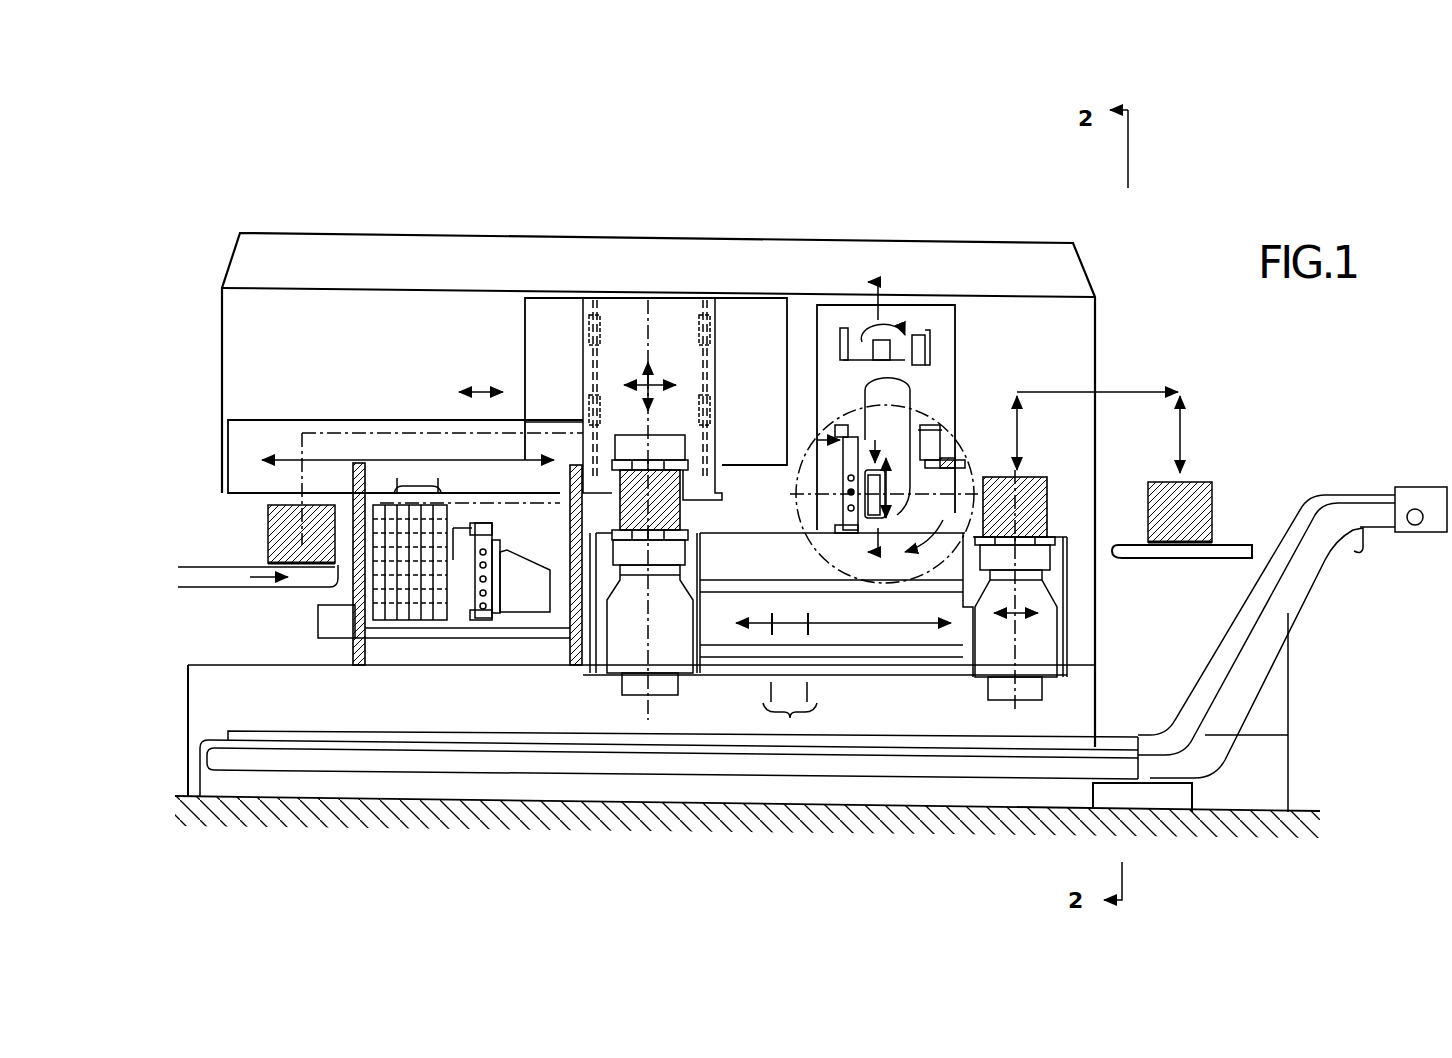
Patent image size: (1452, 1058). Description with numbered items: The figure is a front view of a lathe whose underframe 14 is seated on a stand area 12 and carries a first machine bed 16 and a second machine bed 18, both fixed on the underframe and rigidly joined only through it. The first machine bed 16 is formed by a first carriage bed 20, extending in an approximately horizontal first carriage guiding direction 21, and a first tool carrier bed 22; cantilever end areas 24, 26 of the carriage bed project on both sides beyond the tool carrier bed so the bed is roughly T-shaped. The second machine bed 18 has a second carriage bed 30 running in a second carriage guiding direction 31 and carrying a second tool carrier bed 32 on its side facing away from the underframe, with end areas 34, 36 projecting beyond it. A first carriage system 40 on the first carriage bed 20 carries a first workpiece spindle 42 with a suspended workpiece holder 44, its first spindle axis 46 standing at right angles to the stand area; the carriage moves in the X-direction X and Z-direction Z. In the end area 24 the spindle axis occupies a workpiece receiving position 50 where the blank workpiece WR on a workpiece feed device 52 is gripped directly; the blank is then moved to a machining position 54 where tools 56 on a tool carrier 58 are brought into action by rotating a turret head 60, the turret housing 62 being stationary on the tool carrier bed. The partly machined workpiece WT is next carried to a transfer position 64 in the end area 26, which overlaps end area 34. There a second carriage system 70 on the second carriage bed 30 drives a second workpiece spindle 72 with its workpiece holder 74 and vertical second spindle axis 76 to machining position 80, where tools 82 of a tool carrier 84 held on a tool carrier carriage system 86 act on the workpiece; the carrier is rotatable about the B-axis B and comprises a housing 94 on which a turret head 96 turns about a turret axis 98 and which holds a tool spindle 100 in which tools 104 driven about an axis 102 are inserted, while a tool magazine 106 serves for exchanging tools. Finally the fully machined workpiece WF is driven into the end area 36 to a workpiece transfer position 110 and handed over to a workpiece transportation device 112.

The stand area 12 is at (292, 792).
The underframe 14 is at (334, 712).
The first machine bed 16 is at (364, 405).
The second machine bed 18 is at (905, 468).
The first carriage bed 20 is at (262, 432).
The first carriage guiding direction 21 is at (287, 457).
The first tool carrier bed 22 is at (398, 632).
The cantilever end area 24 is at (237, 436).
The cantilever end area 26 is at (745, 500).
The second carriage bed 30 is at (860, 548).
The second carriage guiding direction 31 is at (832, 626).
The second tool carrier bed 32 is at (952, 340).
The end area 34 is at (740, 540).
The end area 36 is at (1150, 482).
The first carriage system 40 is at (581, 412).
The first workpiece spindle 42 is at (705, 428).
The workpiece holder 44 is at (722, 468).
The first spindle axis 46 is at (648, 340).
The workpiece receiving position 50 is at (297, 483).
The workpiece feed device 52 is at (233, 573).
The machining position 54 is at (418, 476).
The tools 56 is at (440, 603).
The tool carrier 58 is at (543, 622).
The turret head 60 is at (470, 603).
The turret housing 62 is at (527, 603).
The transfer position 64 is at (670, 640).
The second carriage system 70 is at (628, 642).
The second workpiece spindle 72 is at (652, 698).
The workpiece holder 74 is at (605, 684).
The second spindle axis 76 is at (665, 608).
The machining position 80 is at (790, 718).
The tools 82 is at (832, 318).
The tool carrier 84 is at (918, 644).
The tool carrier carriage system 86 is at (928, 372).
The housing 94 is at (1052, 585).
The tool holder 96 is at (870, 462).
The turret axis 98 is at (848, 430).
The tool spindle 100 is at (962, 440).
The axis 102 is at (1024, 394).
The tools 104 is at (932, 455).
The tool magazine 106 is at (897, 338).
The workpiece transfer position 110 is at (1062, 670).
The workpiece transportation device 112 is at (1222, 548).
The X-direction X is at (478, 388).
The Z-direction Z is at (642, 360).
The B-axis B is at (1055, 562).
The partly machined workpiece WT is at (585, 436).
The blank workpiece WR is at (270, 522).
The fully machined workpiece WF is at (1200, 512).